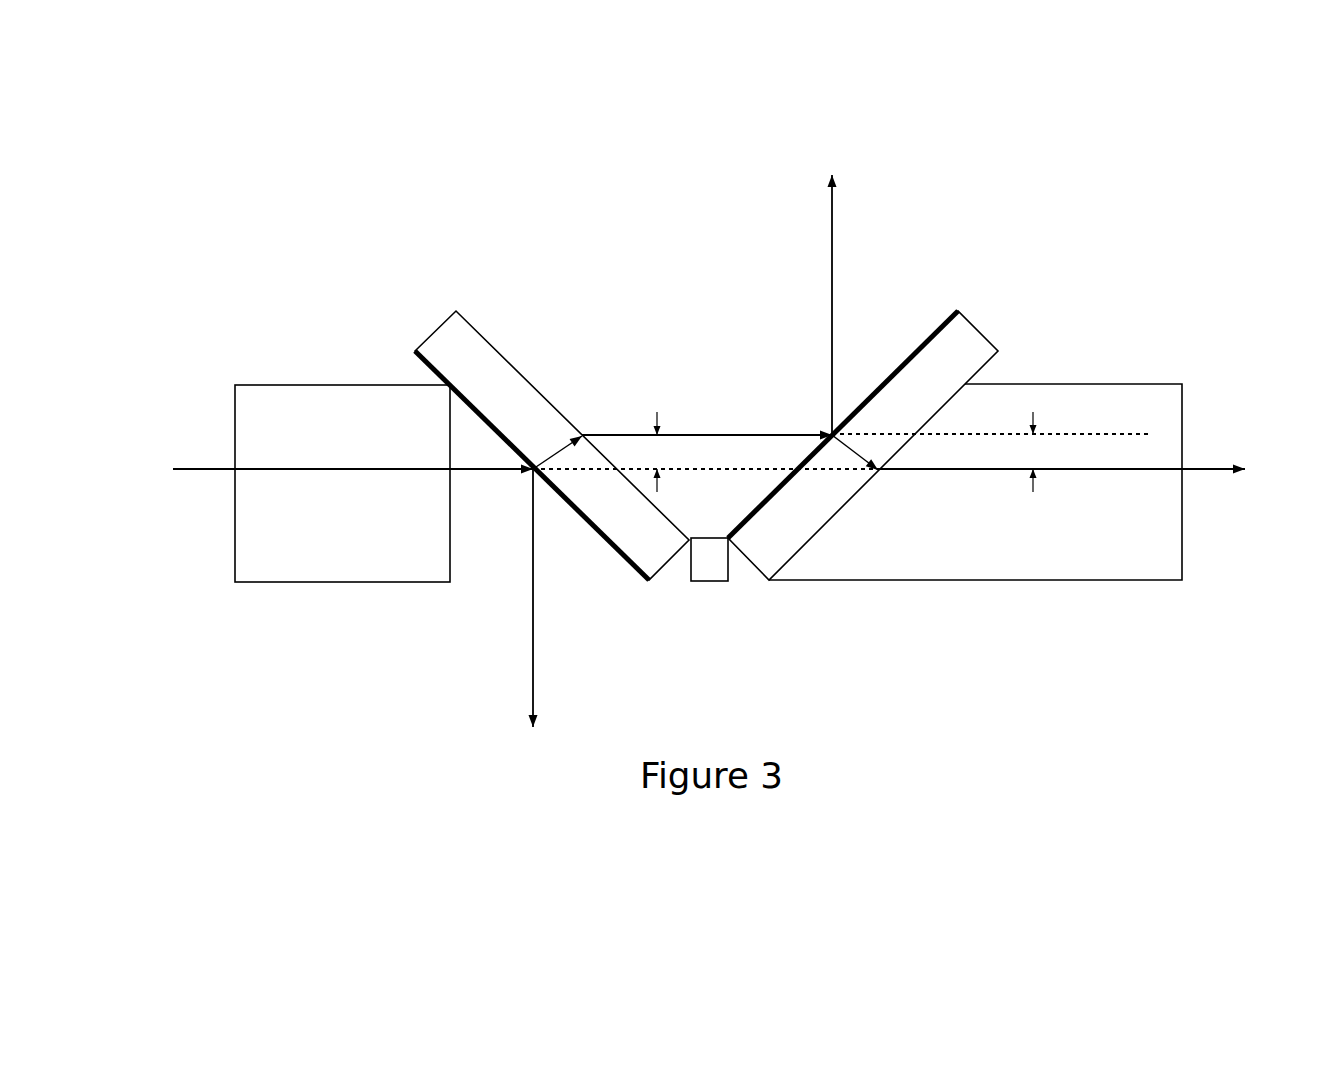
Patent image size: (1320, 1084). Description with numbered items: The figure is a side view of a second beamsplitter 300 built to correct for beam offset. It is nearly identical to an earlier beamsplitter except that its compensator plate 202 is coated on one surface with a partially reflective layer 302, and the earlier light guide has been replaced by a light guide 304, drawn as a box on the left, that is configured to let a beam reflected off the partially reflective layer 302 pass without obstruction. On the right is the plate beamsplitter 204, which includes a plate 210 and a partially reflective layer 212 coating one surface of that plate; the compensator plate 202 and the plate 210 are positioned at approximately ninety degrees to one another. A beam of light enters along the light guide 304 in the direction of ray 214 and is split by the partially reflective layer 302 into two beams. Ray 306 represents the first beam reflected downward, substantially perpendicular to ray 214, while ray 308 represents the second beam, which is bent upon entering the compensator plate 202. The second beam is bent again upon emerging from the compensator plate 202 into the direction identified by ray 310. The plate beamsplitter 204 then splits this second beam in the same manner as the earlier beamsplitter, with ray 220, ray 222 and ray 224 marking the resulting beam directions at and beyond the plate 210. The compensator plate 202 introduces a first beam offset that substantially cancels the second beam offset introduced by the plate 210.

The second beamsplitter 300 is at (1025, 175).
The compensator plate 202 is at (472, 320).
The plate beamsplitter 204 is at (955, 403).
The plate 210 is at (990, 338).
The partially reflective layer 212 is at (932, 330).
The ray 214 is at (193, 472).
The ray 220 is at (828, 222).
The ray 222 is at (848, 420).
The ray 224 is at (1213, 472).
The partially reflective layer 302 is at (413, 350).
The light guide 304 is at (335, 583).
The ray 306 is at (536, 685).
The ray 308 is at (560, 440).
The ray 310 is at (698, 432).